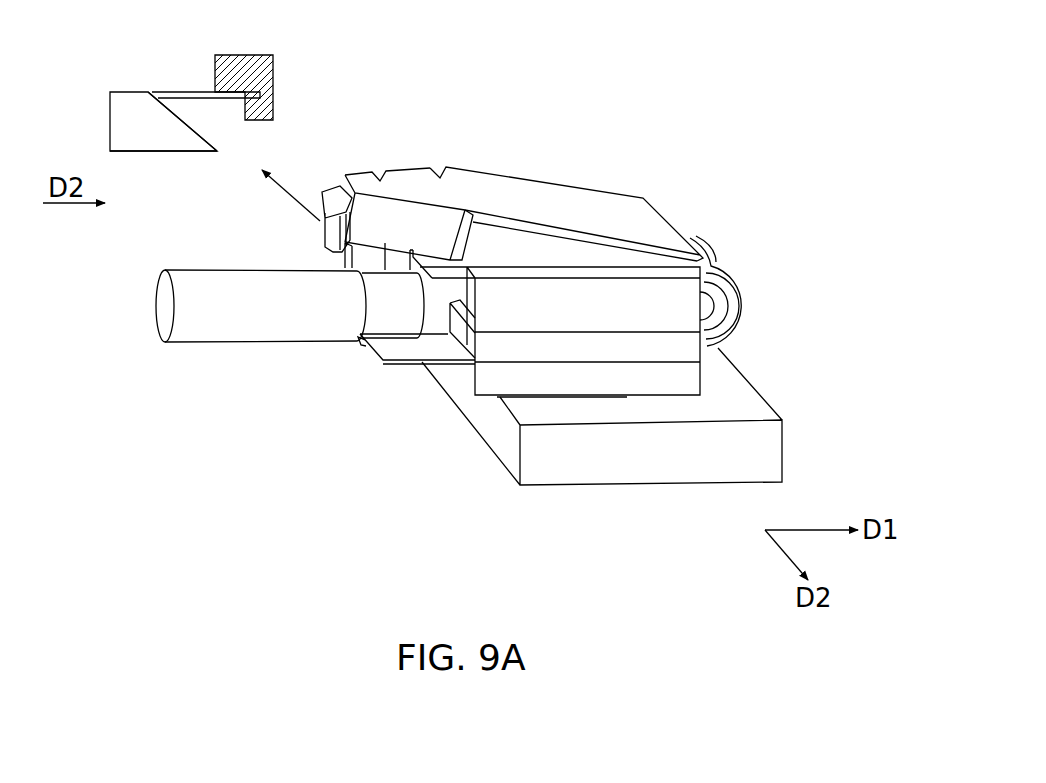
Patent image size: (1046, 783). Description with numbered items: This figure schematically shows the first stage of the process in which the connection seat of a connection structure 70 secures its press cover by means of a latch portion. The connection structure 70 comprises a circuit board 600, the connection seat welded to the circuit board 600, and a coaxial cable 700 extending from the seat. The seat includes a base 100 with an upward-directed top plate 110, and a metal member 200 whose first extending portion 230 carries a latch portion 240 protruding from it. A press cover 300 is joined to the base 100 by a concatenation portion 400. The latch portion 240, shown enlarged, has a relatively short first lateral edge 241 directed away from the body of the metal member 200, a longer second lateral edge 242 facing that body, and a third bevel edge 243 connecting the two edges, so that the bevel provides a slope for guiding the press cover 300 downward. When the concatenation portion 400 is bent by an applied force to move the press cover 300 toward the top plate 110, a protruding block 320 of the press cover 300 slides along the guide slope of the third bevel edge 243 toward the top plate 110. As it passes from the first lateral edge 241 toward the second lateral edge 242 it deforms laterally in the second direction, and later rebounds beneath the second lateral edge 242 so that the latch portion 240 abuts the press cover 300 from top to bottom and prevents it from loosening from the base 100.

The connection structure 70 is at (743, 81).
The base 100 is at (637, 408).
The top plate 110 is at (608, 348).
The metal member 200 is at (367, 353).
The first extending portion 230 is at (368, 257).
The latch portion 240 is at (96, 88).
The first lateral edge 241 is at (128, 91).
The second lateral edge 242 is at (152, 153).
The third bevel edge 243 is at (190, 126).
The press cover 300 is at (658, 206).
The protruding block 320 is at (188, 91).
The concatenation portion 400 is at (744, 304).
The circuit board 600 is at (686, 491).
The coaxial cable 700 is at (151, 334).